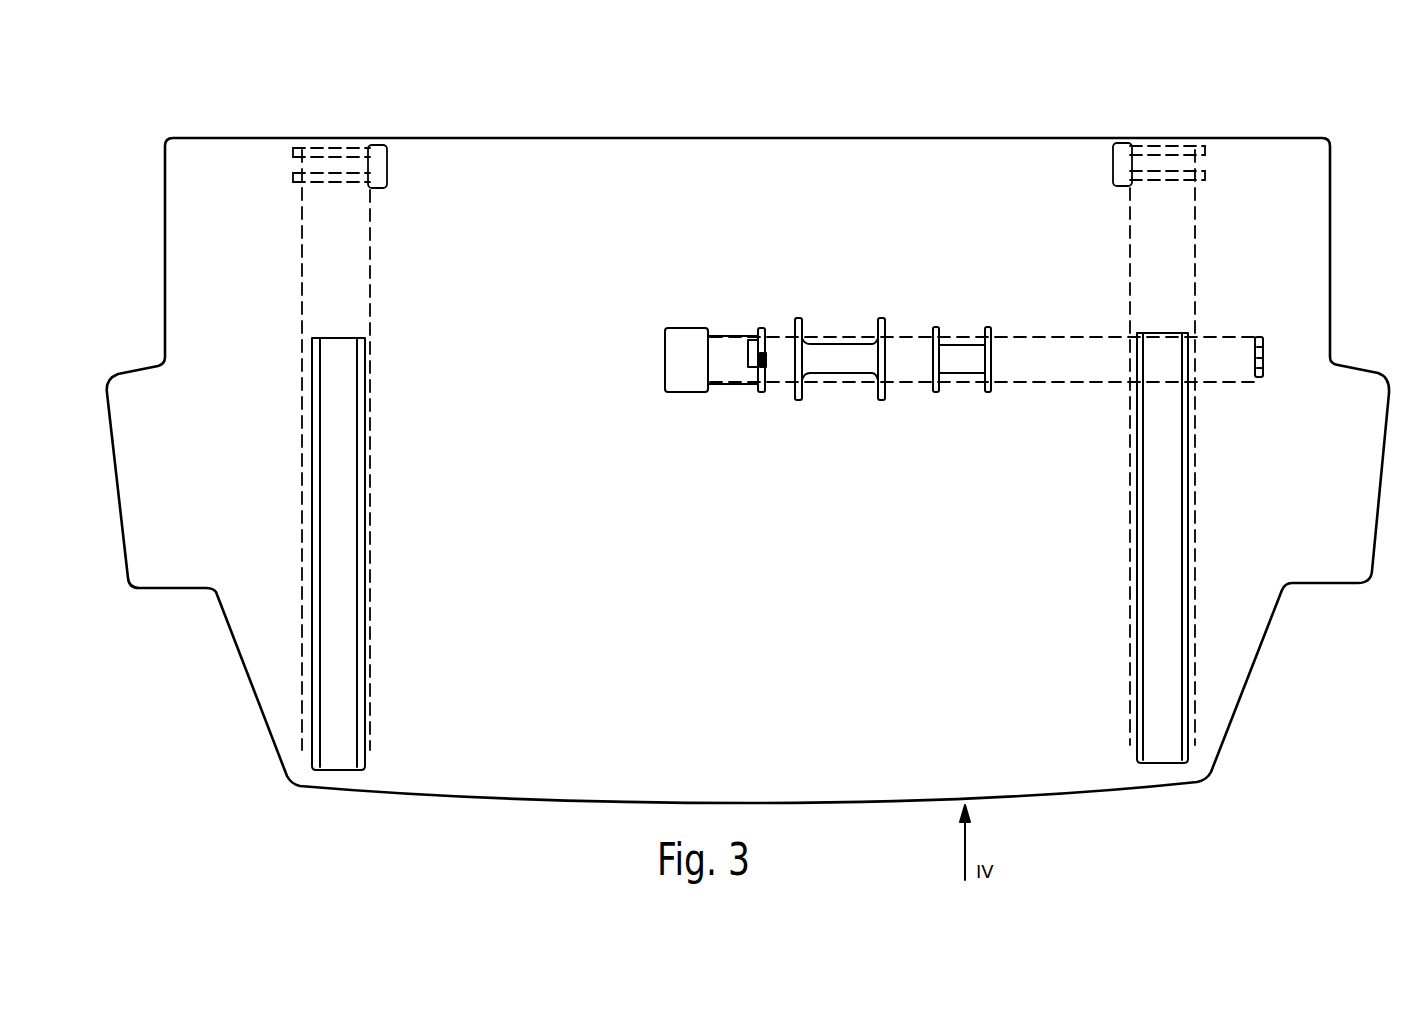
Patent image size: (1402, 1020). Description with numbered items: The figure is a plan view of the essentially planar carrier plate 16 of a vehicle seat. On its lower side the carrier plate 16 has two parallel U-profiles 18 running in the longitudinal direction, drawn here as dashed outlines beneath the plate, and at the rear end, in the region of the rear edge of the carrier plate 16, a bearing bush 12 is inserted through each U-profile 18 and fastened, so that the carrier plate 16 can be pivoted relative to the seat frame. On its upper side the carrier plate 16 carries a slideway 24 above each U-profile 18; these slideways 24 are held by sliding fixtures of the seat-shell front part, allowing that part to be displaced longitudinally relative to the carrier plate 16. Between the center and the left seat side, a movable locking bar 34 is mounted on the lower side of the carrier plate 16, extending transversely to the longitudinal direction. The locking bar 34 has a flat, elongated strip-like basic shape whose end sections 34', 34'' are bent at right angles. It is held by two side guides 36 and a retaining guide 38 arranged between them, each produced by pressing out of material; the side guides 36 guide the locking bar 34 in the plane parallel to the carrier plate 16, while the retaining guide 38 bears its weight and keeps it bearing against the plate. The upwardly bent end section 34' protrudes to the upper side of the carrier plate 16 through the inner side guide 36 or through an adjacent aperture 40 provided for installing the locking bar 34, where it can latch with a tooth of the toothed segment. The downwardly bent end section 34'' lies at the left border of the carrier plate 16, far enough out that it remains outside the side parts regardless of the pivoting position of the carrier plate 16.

The bearing bush 12 is at (381, 143).
The carrier plate 16 is at (485, 767).
The U-profile 18 is at (328, 240).
The slideway 24 is at (340, 748).
The locking bar 34 is at (982, 314).
The upwardly bent end section 34' is at (728, 289).
The downwardly bent end section 34'' is at (1290, 402).
The side guide 36 is at (733, 385).
The retaining guide 38 is at (800, 387).
The aperture 40 is at (685, 380).